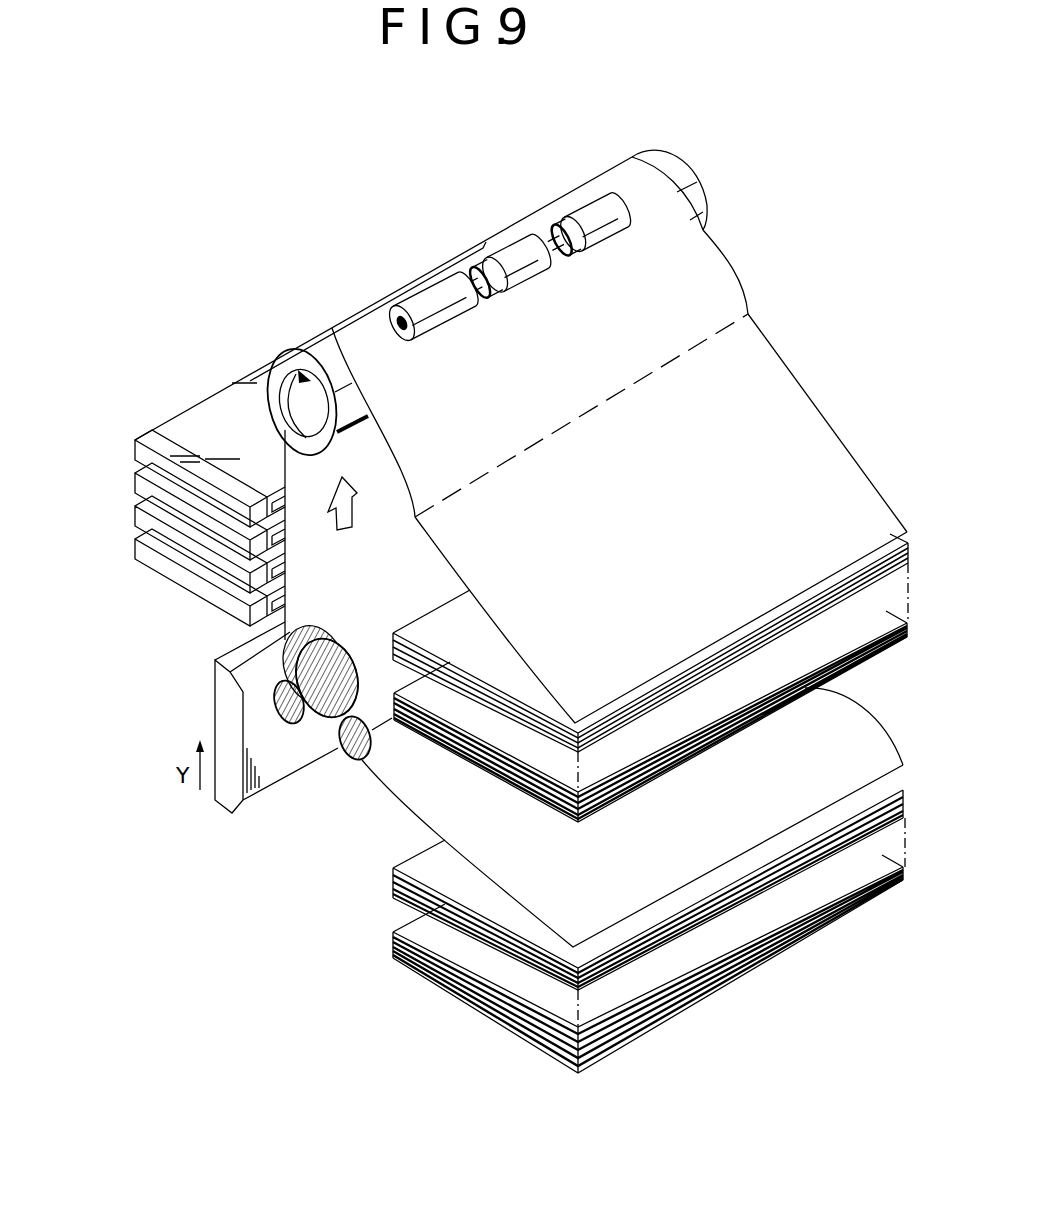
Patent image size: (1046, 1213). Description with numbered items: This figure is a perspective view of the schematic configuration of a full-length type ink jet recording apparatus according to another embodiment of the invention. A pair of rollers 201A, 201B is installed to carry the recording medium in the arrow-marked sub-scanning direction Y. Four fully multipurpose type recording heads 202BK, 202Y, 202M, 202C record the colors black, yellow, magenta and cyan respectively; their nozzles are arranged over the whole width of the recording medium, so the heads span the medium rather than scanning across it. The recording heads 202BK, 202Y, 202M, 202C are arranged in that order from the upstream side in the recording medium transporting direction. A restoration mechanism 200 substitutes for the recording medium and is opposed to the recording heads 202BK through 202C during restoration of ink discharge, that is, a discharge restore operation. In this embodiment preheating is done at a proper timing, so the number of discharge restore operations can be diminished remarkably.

The restoration mechanism 200 is at (226, 805).
The roller 201A is at (656, 158).
The roller 201B is at (331, 718).
The recording head 202C is at (135, 440).
The recording head 202M is at (135, 484).
The recording head 202Y is at (135, 520).
The recording head 202BK is at (202, 594).